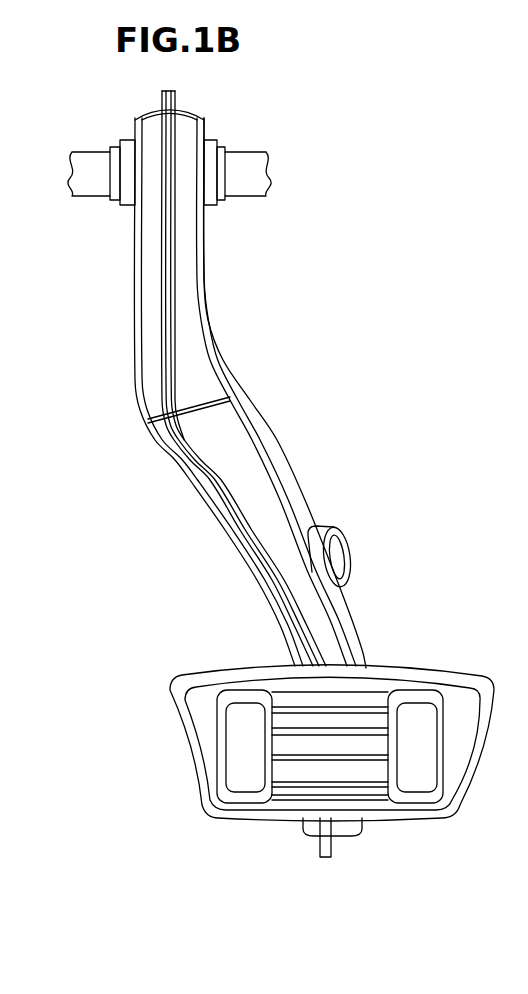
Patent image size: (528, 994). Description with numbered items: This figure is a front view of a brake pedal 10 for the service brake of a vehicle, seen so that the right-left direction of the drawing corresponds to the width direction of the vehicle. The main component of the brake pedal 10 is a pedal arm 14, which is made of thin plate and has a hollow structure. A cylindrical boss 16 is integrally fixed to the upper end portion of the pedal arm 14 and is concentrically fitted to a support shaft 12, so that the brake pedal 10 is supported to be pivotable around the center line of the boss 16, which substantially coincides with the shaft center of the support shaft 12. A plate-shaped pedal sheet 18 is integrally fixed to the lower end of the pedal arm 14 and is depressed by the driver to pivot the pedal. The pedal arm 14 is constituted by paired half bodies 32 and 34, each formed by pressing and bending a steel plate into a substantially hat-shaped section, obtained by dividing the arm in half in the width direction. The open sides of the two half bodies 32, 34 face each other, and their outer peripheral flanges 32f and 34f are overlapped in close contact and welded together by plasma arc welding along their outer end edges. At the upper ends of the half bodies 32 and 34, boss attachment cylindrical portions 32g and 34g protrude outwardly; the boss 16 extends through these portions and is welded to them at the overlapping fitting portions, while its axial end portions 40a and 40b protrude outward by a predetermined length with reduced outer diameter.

The brake pedal 10 is at (342, 194).
The support shaft 12 is at (250, 177).
The pedal arm 14 is at (178, 548).
The boss 16 is at (100, 166).
The pedal sheet 18 is at (426, 676).
The half body 32 is at (201, 480).
The half body 34 is at (282, 472).
The outer peripheral flange 32f is at (163, 365).
The outer peripheral flange 34f is at (172, 314).
The boss attachment cylindrical portion 32g is at (128, 192).
The boss attachment cylindrical portion 34g is at (208, 195).
The end portion 40a is at (113, 155).
The end portion 40b is at (222, 155).